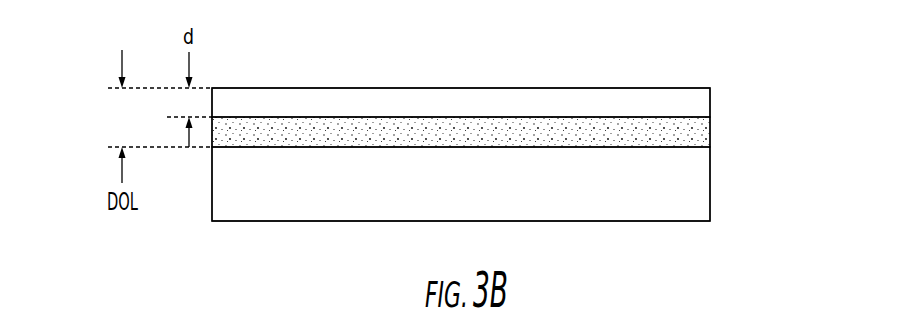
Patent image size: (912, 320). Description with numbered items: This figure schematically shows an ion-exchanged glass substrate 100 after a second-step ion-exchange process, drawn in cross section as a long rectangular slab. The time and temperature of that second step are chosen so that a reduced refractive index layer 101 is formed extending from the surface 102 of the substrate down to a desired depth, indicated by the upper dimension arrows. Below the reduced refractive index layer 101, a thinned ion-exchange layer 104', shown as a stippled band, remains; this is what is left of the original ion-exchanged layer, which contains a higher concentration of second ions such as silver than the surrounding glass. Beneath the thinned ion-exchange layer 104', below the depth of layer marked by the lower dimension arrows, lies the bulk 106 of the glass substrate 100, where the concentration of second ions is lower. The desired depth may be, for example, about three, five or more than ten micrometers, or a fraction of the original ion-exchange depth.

The ion-exchanged glass substrate 100 is at (121, 42).
The reduced refractive index layer 101 is at (722, 101).
The surface 102 is at (665, 88).
The thinned ion-exchange layer 104' is at (516, 148).
The bulk 106 is at (435, 193).